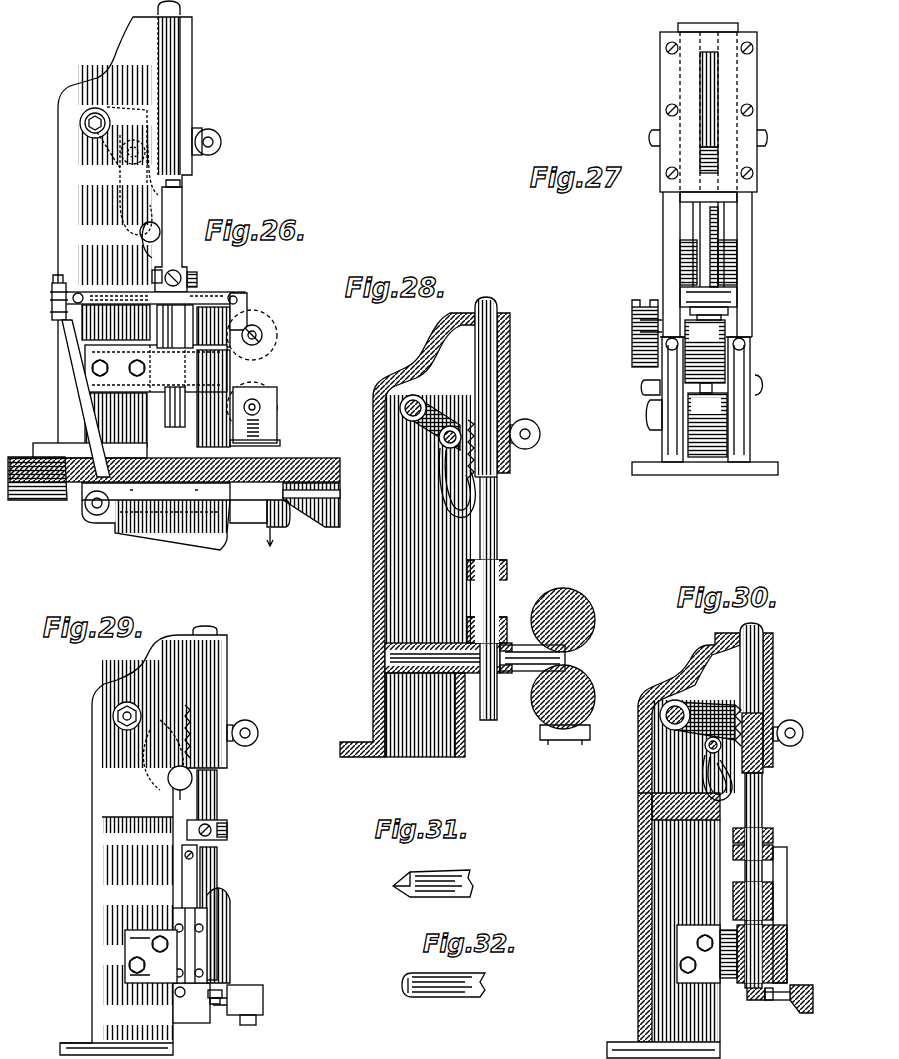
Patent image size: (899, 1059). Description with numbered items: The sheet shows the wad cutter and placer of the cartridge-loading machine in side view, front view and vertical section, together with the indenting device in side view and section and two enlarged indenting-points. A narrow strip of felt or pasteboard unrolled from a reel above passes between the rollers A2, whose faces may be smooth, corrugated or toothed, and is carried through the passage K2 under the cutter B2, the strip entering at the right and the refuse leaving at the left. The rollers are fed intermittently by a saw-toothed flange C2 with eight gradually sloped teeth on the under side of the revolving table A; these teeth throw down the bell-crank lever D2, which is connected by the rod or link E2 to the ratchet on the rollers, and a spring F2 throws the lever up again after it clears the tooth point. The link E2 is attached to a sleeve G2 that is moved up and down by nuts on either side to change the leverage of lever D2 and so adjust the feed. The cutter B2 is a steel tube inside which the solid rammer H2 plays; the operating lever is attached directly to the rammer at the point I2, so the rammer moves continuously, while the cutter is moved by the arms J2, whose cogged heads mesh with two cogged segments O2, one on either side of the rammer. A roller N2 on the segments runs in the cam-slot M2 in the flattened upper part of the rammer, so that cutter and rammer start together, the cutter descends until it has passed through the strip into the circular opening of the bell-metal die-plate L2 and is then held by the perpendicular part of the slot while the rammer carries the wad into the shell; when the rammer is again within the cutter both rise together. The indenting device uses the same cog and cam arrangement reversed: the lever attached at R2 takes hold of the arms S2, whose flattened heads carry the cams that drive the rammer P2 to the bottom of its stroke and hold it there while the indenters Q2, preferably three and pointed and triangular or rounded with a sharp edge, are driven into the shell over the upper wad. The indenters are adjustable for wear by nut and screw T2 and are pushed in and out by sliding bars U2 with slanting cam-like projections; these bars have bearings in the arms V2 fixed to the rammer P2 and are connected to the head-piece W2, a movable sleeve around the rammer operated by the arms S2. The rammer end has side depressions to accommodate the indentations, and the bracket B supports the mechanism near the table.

In FIG. 26, the revolving table A is at (175, 458).
In FIG. 26, the table bracket B is at (37, 478).
In FIG. 26, the rollers A2 is at (269, 368).
In FIG. 27, the rollers A2 is at (706, 388).
In FIG. 28, the rollers A2 is at (593, 622).
In FIG. 26, the cutter B2 is at (226, 302).
In FIG. 27, the cutter B2 is at (721, 318).
In FIG. 28, the cutter B2 is at (507, 612).
In FIG. 26, the saw-toothed flange C2 is at (286, 505).
In FIG. 26, the lever D2 is at (75, 408).
In FIG. 26, the rod or link E2 is at (152, 288).
In FIG. 26, the spring F2 is at (175, 528).
In FIG. 26, the sleeve G2 is at (49, 297).
In FIG. 27, the rammer H2 is at (738, 260).
In FIG. 28, the rammer H2 is at (498, 508).
In FIG. 26, the point of attachment I2 is at (213, 145).
In FIG. 27, the point of attachment I2 is at (722, 156).
In FIG. 27, the arms J2 is at (690, 226).
In FIG. 26, the passage K2 is at (186, 407).
In FIG. 28, the passage K2 is at (442, 658).
In FIG. 28, the die-plate L2 is at (470, 700).
In FIG. 28, the cam-slot M2 is at (457, 469).
In FIG. 28, the roller N2 is at (440, 446).
In FIG. 28, the cogged segments O2 is at (434, 417).
In FIG. 29, the rammer P2 is at (217, 870).
In FIG. 30, the rammer P2 is at (760, 958).
In FIG. 29, the indenter Q2 is at (222, 1000).
In FIG. 30, the indenter Q2 is at (762, 1000).
In FIG. 29, the point of attachment R2 is at (258, 735).
In FIG. 30, the point of attachment R2 is at (788, 722).
In FIG. 29, the arms S2 is at (203, 796).
In FIG. 30, the nut and screw T2 is at (776, 1010).
In FIG. 29, the sliding bars U2 is at (182, 868).
In FIG. 30, the sliding bars U2 is at (790, 988).
In FIG. 29, the arms V2 is at (225, 915).
In FIG. 30, the arms V2 is at (787, 912).
In FIG. 29, the head-piece W2 is at (228, 838).
In FIG. 30, the head-piece W2 is at (773, 840).